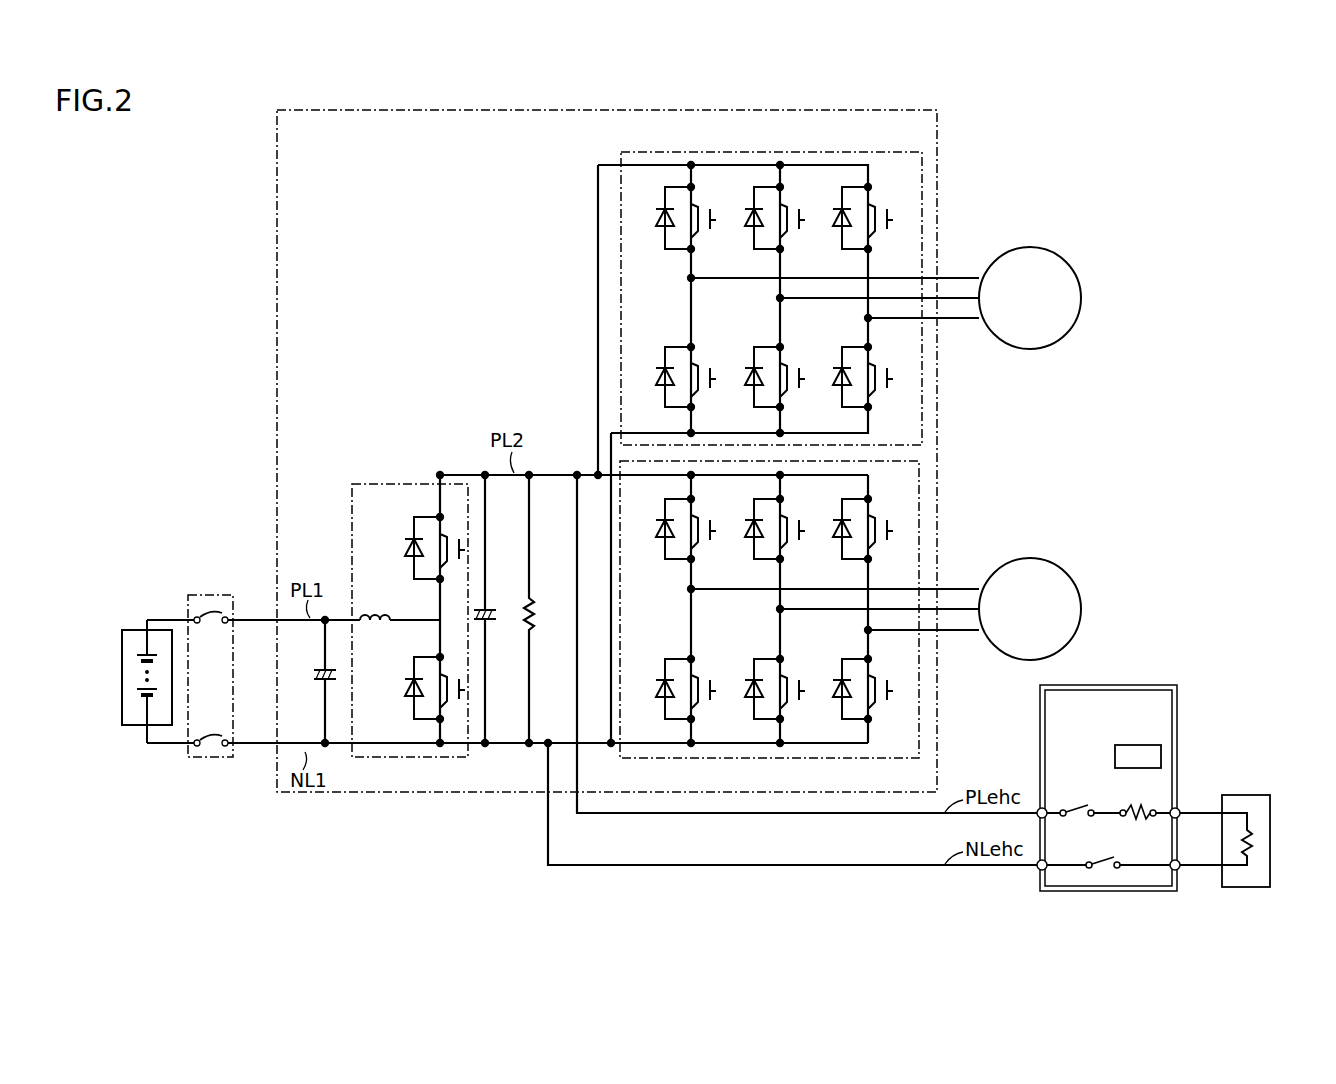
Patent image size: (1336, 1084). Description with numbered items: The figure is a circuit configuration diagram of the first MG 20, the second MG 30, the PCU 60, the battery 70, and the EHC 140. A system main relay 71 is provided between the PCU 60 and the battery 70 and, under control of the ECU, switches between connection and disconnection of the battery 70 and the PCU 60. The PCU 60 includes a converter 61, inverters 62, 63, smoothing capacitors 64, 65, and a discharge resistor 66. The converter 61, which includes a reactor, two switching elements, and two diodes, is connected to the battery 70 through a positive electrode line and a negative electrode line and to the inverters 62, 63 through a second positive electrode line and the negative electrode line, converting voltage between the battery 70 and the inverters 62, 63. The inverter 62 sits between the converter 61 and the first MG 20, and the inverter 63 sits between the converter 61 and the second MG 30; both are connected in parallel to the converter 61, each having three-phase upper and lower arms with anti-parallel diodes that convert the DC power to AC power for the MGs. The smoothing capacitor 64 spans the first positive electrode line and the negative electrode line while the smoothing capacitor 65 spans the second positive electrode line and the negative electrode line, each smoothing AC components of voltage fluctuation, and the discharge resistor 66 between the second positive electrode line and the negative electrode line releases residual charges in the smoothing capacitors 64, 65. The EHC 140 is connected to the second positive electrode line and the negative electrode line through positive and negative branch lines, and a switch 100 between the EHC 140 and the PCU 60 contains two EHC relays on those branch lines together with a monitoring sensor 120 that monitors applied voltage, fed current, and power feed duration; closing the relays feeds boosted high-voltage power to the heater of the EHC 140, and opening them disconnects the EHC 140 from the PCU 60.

The first MG 20 is at (1045, 562).
The second MG 30 is at (1045, 251).
The PCU 60 is at (277, 258).
The converter 61 is at (418, 485).
The inverter 62 is at (685, 760).
The inverter 63 is at (852, 152).
The smoothing capacitor 64 is at (318, 680).
The smoothing capacitor 65 is at (492, 620).
The discharge resistor 66 is at (535, 620).
The battery 70 is at (122, 720).
The system main relay 71 is at (212, 595).
The switch 100 is at (1153, 685).
The monitoring sensor 120 is at (1140, 745).
The EHC 140 is at (1265, 797).